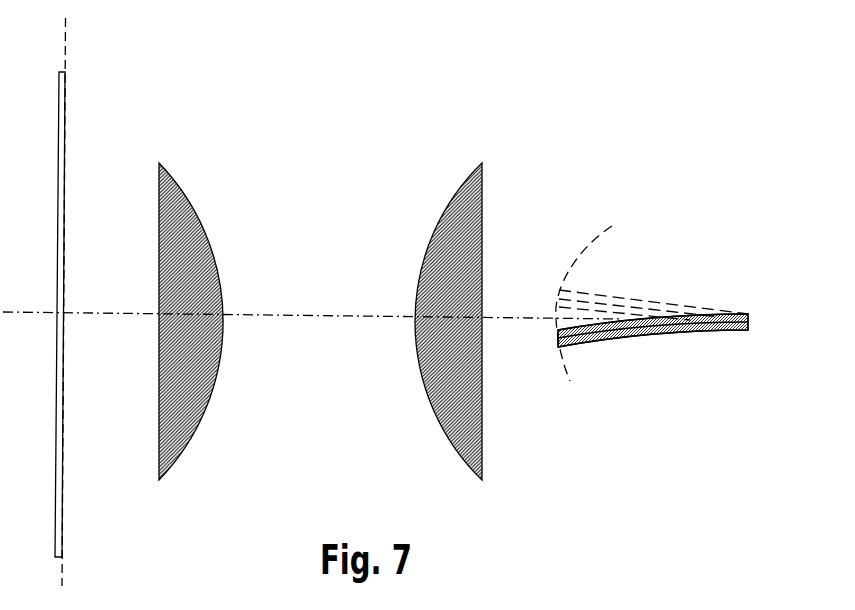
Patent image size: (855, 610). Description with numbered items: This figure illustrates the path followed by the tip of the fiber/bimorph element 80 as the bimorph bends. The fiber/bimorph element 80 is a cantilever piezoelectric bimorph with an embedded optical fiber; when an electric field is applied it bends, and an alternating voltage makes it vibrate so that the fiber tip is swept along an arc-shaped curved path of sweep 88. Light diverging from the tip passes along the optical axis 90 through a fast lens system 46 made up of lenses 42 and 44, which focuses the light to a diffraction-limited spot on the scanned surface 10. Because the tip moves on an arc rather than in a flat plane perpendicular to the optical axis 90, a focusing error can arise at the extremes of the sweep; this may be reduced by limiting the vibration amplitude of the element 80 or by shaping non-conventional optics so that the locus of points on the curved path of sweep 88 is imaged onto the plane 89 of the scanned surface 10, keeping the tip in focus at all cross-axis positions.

The scanned surface 10 is at (67, 103).
The lens 42 is at (203, 376).
The lens 44 is at (467, 380).
The lens system 46 is at (331, 440).
The bimorph/fiber element 80 is at (659, 298).
The curved path of sweep 88 is at (612, 226).
The plane 89 is at (67, 55).
The optical axis 90 is at (244, 315).